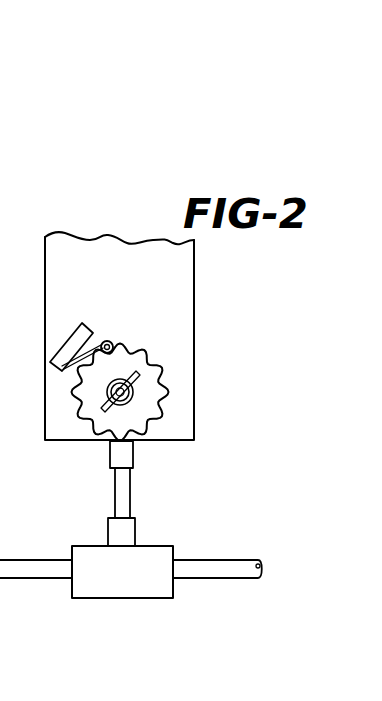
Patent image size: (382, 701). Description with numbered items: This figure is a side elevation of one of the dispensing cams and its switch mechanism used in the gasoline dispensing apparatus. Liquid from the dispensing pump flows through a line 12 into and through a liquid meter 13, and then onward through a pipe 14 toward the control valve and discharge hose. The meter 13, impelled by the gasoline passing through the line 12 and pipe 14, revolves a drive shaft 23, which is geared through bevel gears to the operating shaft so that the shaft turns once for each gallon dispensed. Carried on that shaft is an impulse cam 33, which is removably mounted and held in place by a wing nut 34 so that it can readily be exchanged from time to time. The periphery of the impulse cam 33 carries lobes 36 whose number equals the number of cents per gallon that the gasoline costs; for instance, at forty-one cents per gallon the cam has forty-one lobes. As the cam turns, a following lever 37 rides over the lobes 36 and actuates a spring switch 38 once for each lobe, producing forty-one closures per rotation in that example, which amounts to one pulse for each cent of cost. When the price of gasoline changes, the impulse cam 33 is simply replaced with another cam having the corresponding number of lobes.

The line 12 is at (30, 576).
The liquid meter 13 is at (90, 550).
The pipe 14 is at (222, 561).
The drive shaft 23 is at (113, 491).
The impulse cam 33 is at (118, 362).
The wing nut 34 is at (136, 376).
The lobes 36 is at (149, 354).
The following lever 37 is at (102, 342).
The spring switch 38 is at (74, 336).